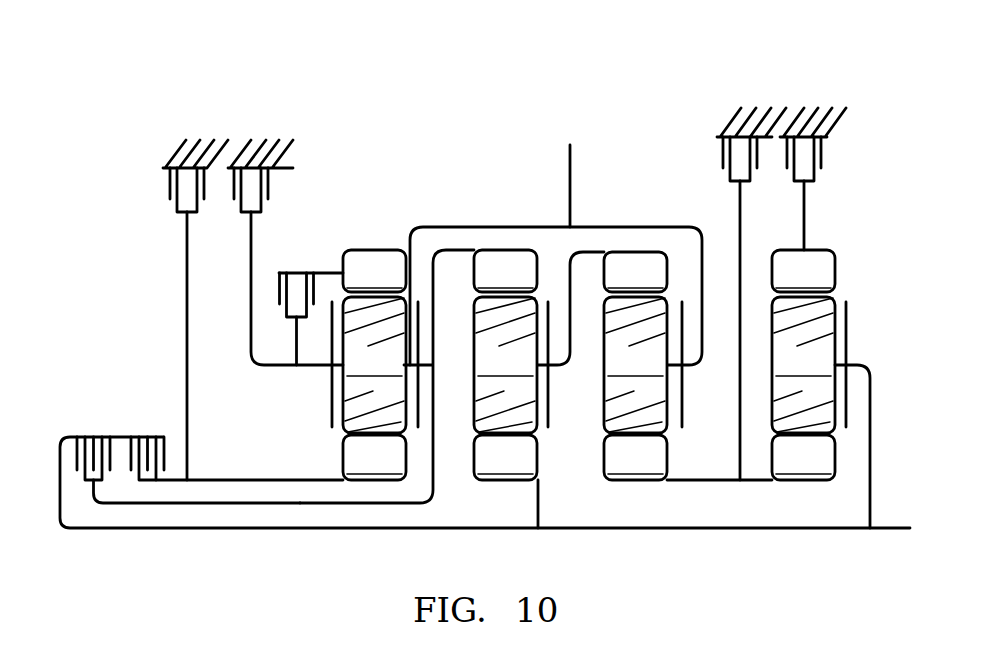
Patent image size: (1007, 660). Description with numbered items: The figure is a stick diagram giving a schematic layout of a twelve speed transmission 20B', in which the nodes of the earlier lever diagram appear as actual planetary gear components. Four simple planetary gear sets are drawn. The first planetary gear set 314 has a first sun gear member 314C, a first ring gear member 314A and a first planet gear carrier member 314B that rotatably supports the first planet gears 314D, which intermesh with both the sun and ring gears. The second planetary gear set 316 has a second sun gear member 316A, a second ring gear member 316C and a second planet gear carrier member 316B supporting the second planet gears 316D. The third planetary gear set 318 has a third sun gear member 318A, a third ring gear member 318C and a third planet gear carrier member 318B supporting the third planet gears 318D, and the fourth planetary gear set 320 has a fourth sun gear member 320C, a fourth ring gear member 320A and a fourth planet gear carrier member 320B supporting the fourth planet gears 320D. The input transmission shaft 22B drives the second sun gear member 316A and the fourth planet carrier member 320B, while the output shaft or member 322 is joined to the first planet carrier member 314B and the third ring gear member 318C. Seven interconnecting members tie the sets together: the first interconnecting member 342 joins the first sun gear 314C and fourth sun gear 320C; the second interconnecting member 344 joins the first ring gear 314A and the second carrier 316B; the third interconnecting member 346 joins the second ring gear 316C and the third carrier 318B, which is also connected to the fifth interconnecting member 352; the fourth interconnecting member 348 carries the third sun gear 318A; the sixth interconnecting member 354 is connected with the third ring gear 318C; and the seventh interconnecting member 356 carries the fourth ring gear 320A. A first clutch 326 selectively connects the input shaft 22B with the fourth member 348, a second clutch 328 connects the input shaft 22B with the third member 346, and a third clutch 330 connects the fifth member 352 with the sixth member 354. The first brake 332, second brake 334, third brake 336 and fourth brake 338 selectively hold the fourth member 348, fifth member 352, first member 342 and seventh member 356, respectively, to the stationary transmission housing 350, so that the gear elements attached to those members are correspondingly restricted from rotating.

The transmission 20B' is at (810, 39).
The input transmission shaft 22B is at (883, 529).
The first planetary gear set 314 is at (663, 419).
The first ring gear member 314A is at (635, 272).
The first planet gear carrier member 314B is at (683, 408).
The first sun gear member 314C is at (635, 457).
The first set of planet gears 314D is at (635, 365).
The second planetary gear set 316 is at (536, 418).
The second sun gear member 316A is at (506, 481).
The second planet gear carrier member 316B is at (549, 407).
The second ring gear member 316C is at (505, 271).
The second set of planet gears 316D is at (505, 365).
The third planetary gear set 318 is at (515, 388).
The third sun gear member 318A is at (374, 457).
The third planet gear carrier member 318B is at (430, 323).
The third ring gear member 318C is at (374, 271).
The third set of planet gears 318D is at (374, 365).
The fourth planetary gear set 320 is at (841, 418).
The fourth ring gear member 320A is at (803, 271).
The fourth planet gear carrier member 320B is at (848, 347).
The fourth sun gear member 320C is at (803, 457).
The fourth set of planet gears 320D is at (803, 365).
The output shaft or member 322 is at (570, 150).
The first clutch 326 is at (165, 453).
The second clutch 328 is at (118, 455).
The third clutch 330 is at (279, 293).
The first brake 332 is at (170, 190).
The second brake 334 is at (270, 190).
The third brake 336 is at (722, 155).
The fourth brake 338 is at (821, 157).
The first shaft or interconnecting member 342 is at (715, 481).
The second shaft or interconnecting member 344 is at (573, 330).
The third shaft or interconnecting member 346 is at (434, 440).
The fourth shaft or interconnecting member 348 is at (233, 481).
The transmission housing 350 is at (840, 122).
The fifth shaft or interconnecting member 352 is at (250, 332).
The sixth shaft or interconnecting member 354 is at (292, 272).
The seventh shaft or interconnecting member 356 is at (805, 217).